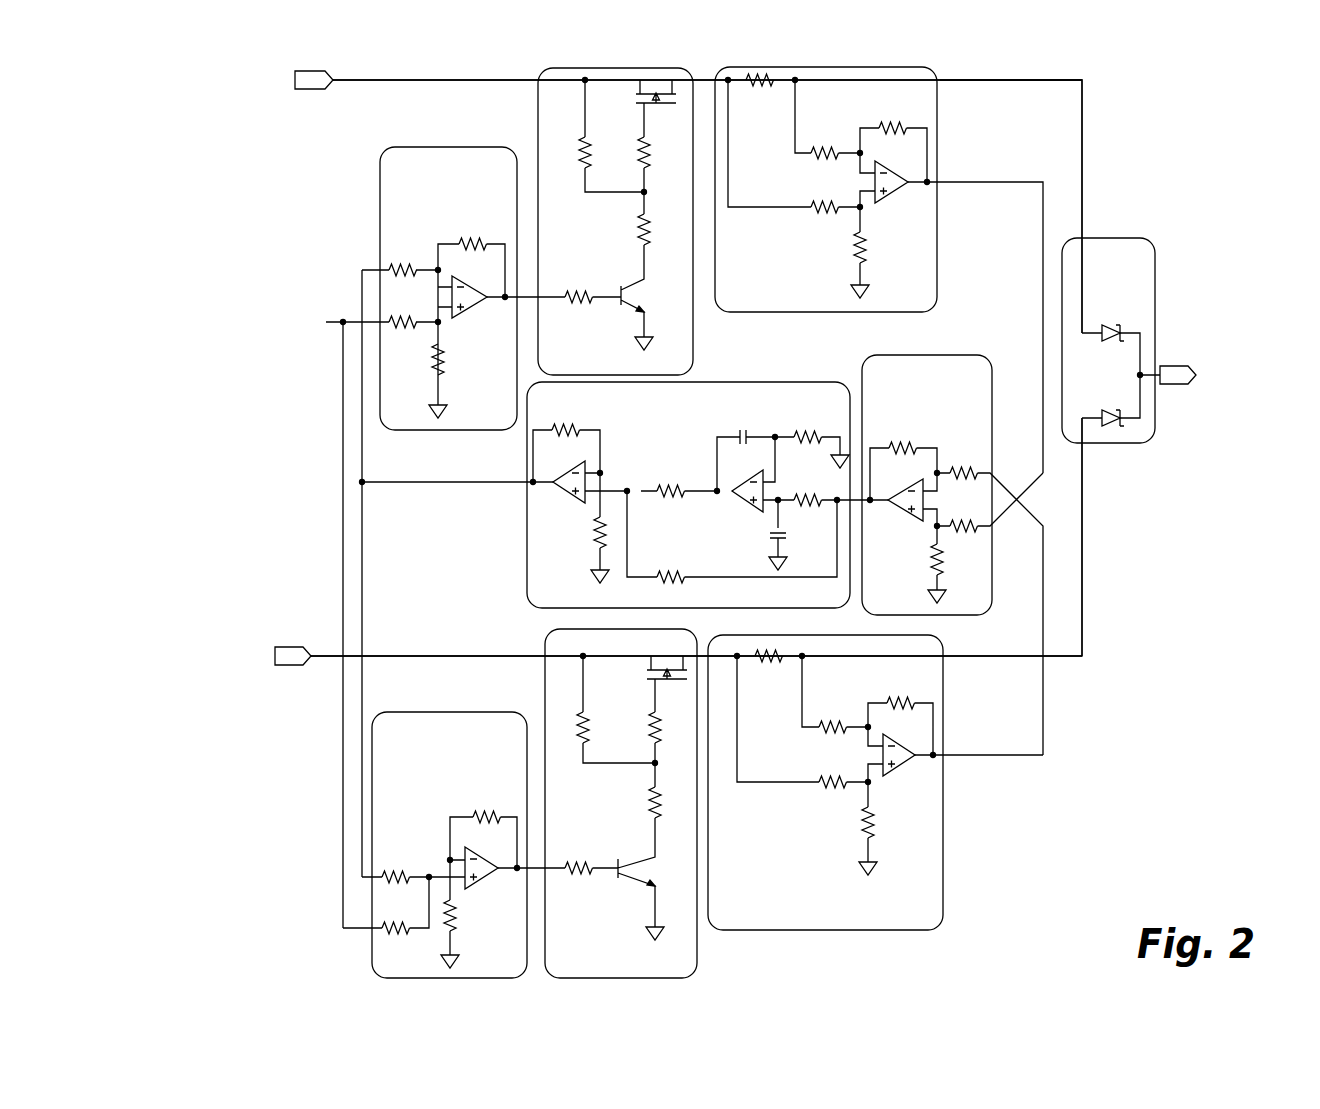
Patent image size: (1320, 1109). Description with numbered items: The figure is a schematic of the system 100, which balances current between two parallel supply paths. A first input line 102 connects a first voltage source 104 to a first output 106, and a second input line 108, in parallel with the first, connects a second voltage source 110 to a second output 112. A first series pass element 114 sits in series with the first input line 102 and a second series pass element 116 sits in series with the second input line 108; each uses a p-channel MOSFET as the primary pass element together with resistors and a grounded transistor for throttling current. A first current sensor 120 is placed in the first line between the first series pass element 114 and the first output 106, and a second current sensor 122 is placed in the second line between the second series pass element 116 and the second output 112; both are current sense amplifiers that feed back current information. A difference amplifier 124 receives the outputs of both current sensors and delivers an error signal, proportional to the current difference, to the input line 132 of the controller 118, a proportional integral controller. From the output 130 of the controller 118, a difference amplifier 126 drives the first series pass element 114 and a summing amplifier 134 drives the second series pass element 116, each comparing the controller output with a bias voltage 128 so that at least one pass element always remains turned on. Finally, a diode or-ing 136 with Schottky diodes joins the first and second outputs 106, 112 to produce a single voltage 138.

The system 100 is at (178, 165).
The first input line 102 is at (368, 83).
The first voltage source 104 is at (297, 100).
The first output 106 is at (1005, 80).
The second input line 108 is at (416, 655).
The second voltage source 110 is at (282, 641).
The second output 112 is at (1082, 517).
The first series pass element 114 is at (533, 122).
The second series pass element 116 is at (697, 950).
The controller 118 is at (730, 382).
The first current sensor 120 is at (937, 130).
The second current sensor 122 is at (862, 930).
The difference amplifier 124 is at (962, 355).
The difference amplifier 126 is at (399, 147).
The bias voltage 128 is at (295, 294).
The output of the controller 130 is at (455, 485).
The input line of the controller 132 is at (857, 496).
The summing amplifier 134 is at (372, 950).
The diode or-ing 136 is at (1117, 238).
The single voltage 138 is at (1182, 349).